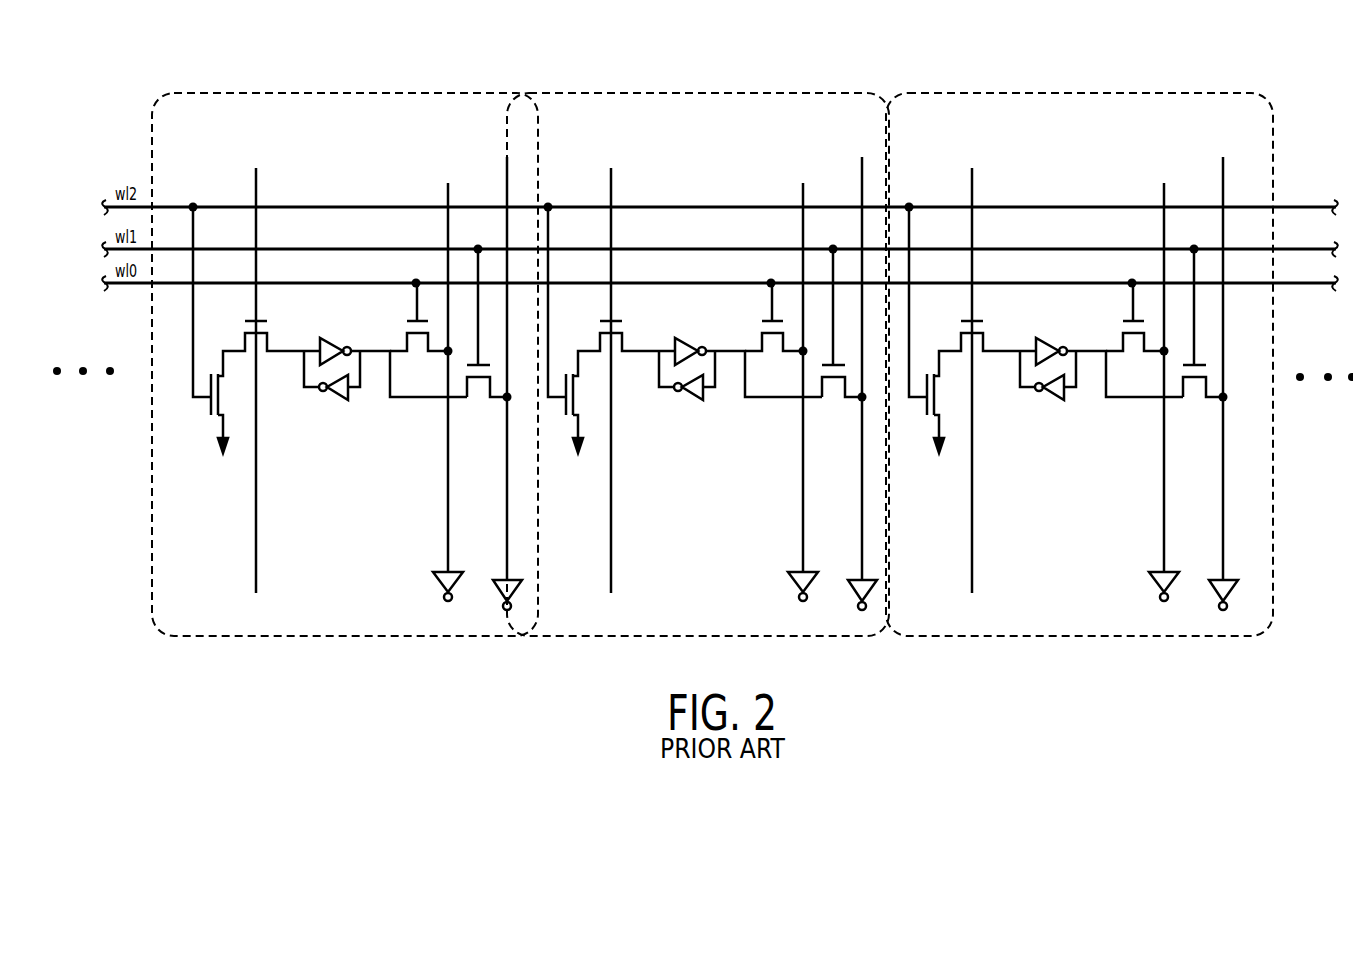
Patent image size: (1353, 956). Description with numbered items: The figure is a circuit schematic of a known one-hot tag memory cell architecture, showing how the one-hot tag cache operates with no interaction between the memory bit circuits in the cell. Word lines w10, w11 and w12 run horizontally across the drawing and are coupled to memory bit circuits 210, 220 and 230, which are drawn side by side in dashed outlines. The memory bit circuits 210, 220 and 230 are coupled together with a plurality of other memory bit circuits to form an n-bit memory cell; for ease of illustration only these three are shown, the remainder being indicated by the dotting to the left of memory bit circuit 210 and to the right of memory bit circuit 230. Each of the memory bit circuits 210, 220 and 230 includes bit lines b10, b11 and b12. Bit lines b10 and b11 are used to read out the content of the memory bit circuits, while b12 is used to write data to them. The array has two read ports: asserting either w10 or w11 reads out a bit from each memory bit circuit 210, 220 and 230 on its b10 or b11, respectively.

The memory bit circuit 210 is at (372, 93).
The memory bit circuit 220 is at (722, 93).
The memory bit circuit 230 is at (1092, 93).